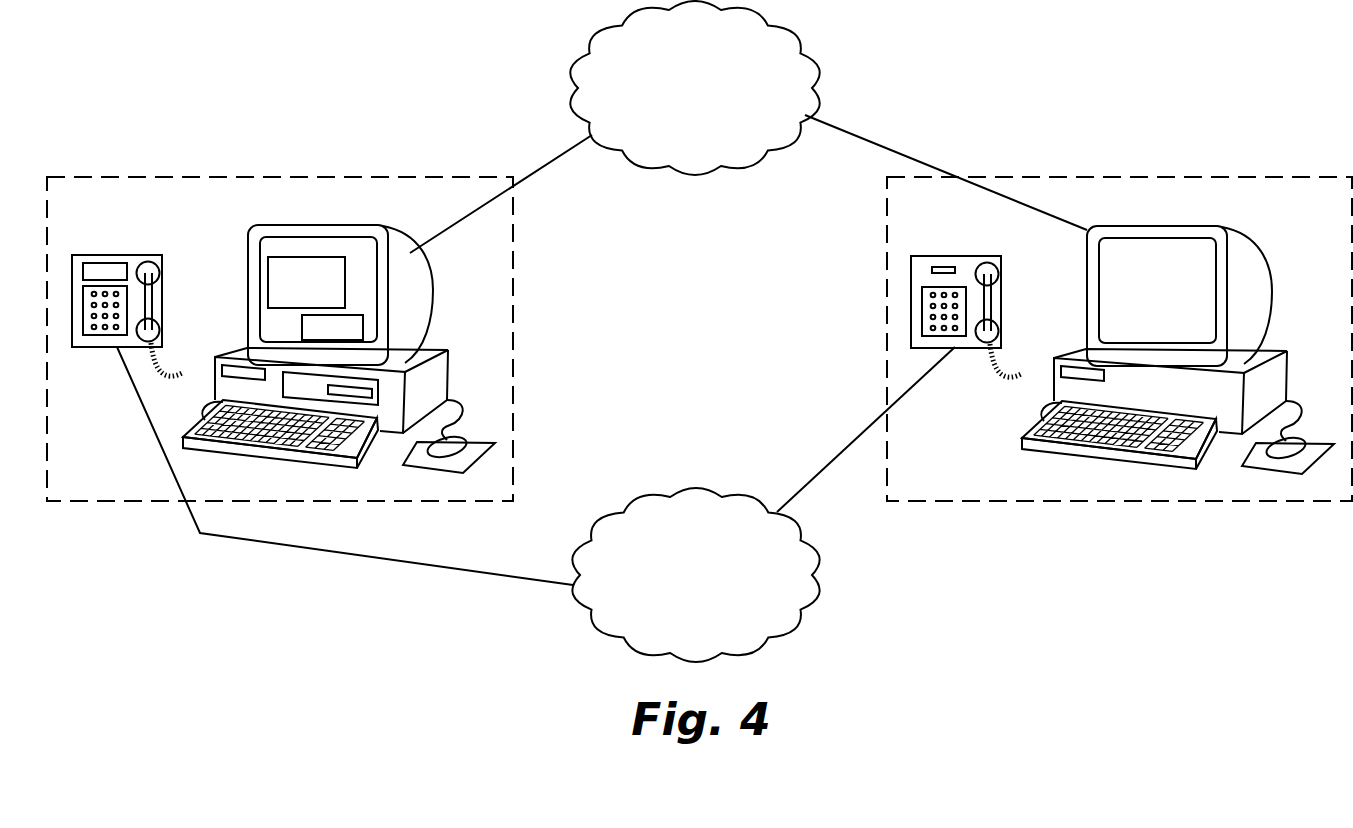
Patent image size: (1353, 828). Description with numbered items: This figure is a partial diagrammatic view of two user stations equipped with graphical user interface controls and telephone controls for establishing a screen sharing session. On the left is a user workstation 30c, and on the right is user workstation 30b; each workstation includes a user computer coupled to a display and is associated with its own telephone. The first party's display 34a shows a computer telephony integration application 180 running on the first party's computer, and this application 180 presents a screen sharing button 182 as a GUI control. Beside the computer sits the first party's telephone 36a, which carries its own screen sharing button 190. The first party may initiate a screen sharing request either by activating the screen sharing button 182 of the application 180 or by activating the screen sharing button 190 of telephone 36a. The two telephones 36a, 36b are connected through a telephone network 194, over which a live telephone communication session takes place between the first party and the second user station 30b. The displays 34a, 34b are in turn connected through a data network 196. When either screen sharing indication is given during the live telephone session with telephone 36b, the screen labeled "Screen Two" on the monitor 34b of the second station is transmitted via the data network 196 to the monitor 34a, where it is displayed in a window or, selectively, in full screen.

The user workstation 30c is at (308, 176).
The user workstation 30b is at (1221, 176).
The display 34a is at (339, 310).
The display 34b is at (1178, 345).
The telephone 36a is at (141, 286).
The telephone 36b is at (967, 287).
The computer telephony integration application 180 is at (363, 333).
The screen sharing button 182 is at (302, 327).
The screen sharing button 190 is at (128, 270).
The network 194 is at (712, 625).
The data network 196 is at (711, 139).